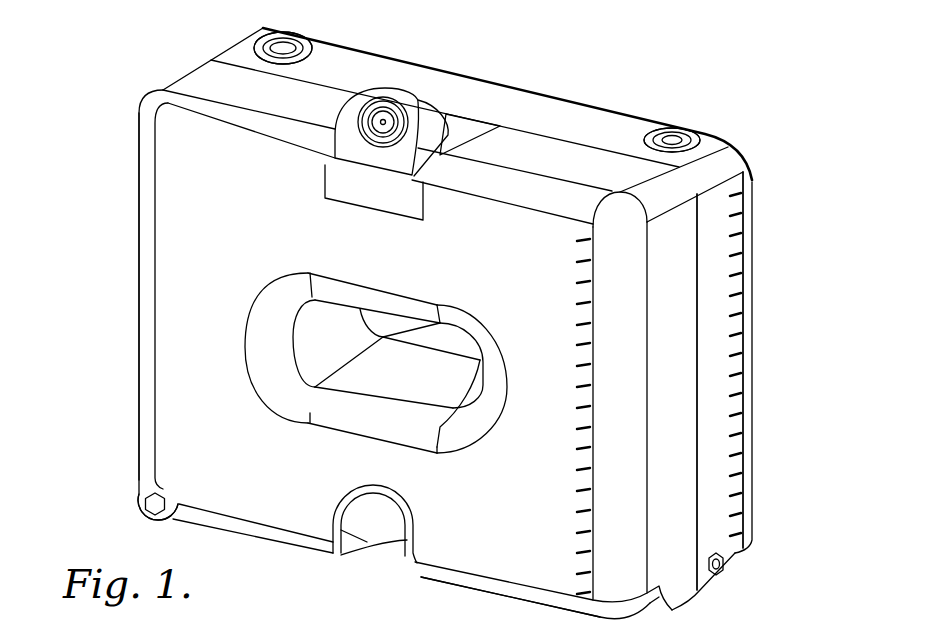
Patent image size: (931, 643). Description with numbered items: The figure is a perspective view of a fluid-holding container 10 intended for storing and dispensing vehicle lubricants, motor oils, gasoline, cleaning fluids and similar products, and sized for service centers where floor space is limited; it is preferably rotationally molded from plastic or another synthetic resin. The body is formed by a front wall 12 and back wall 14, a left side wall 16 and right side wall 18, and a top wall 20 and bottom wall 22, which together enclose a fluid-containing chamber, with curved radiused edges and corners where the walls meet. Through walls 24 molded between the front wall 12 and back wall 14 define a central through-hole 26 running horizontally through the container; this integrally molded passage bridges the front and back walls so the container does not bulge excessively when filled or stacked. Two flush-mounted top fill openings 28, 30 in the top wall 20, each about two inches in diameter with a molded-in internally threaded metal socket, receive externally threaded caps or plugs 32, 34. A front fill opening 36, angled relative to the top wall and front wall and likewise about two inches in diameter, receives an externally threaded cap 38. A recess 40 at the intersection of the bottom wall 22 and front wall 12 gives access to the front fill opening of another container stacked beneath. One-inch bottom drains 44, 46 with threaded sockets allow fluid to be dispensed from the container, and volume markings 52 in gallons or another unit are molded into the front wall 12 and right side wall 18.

The fluid-holding container 10 is at (578, 44).
The front wall 12 is at (298, 515).
The back wall 14 is at (586, 96).
The left side wall 16 is at (138, 250).
The right side wall 18 is at (697, 480).
The top wall 20 is at (458, 88).
The bottom wall 22 is at (492, 596).
The through walls 24 is at (335, 352).
The central through-hole 26 is at (382, 387).
The top fill opening 28 is at (313, 38).
The top fill opening 30 is at (662, 136).
The cap or plug 32 is at (260, 40).
The cap or plug 34 is at (703, 140).
The front fill opening 36 is at (378, 144).
The cap 38 is at (381, 122).
The recess 40 is at (398, 553).
The bottom drain 44 is at (147, 510).
The bottom drain 46 is at (722, 568).
The volume markings 52 is at (735, 278).